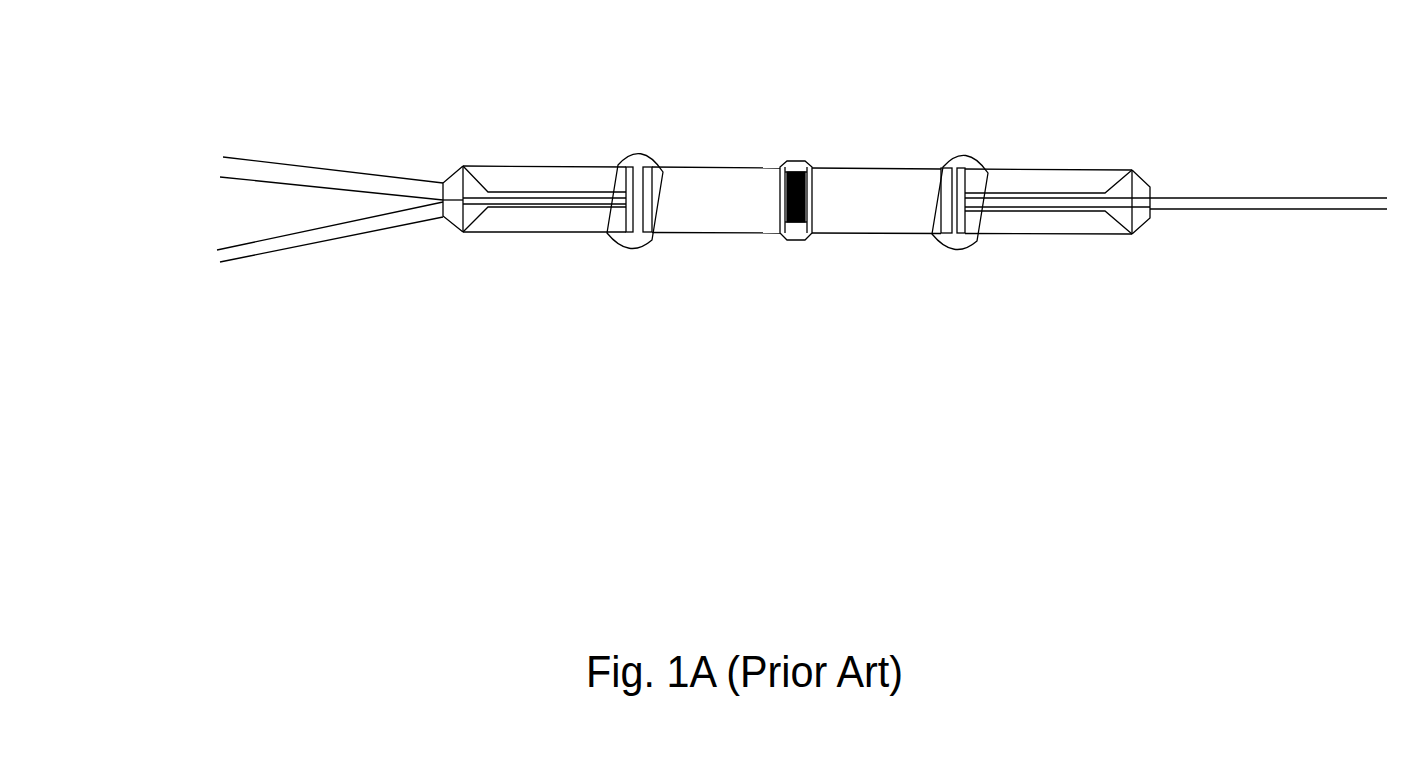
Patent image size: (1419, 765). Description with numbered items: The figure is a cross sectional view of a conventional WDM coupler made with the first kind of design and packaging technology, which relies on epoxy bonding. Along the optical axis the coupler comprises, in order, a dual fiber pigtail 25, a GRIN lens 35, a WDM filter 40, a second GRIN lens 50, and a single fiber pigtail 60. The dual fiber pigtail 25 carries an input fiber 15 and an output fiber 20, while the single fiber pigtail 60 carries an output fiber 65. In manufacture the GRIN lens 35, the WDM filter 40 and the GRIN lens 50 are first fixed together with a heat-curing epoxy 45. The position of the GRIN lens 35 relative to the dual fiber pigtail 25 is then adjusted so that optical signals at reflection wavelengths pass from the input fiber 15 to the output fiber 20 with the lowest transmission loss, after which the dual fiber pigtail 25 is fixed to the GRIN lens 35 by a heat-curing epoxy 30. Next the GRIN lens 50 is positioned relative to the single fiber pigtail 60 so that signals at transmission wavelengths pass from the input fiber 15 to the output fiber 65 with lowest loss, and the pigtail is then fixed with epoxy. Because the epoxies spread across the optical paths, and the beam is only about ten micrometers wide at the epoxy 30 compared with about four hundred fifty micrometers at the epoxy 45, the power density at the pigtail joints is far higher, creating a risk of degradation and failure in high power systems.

The input fiber 15 is at (202, 160).
The output fiber 20 is at (201, 254).
The dual fiber pigtail 25 is at (510, 232).
The heat-curing epoxy 30 is at (630, 154).
The GRIN lens 35 is at (710, 236).
The WDM filter 40 is at (774, 157).
The heat-curing epoxy 45 is at (811, 147).
The GRIN lens 50 is at (985, 151).
The single fiber pigtail 60 is at (1089, 234).
The output fiber 65 is at (1308, 196).